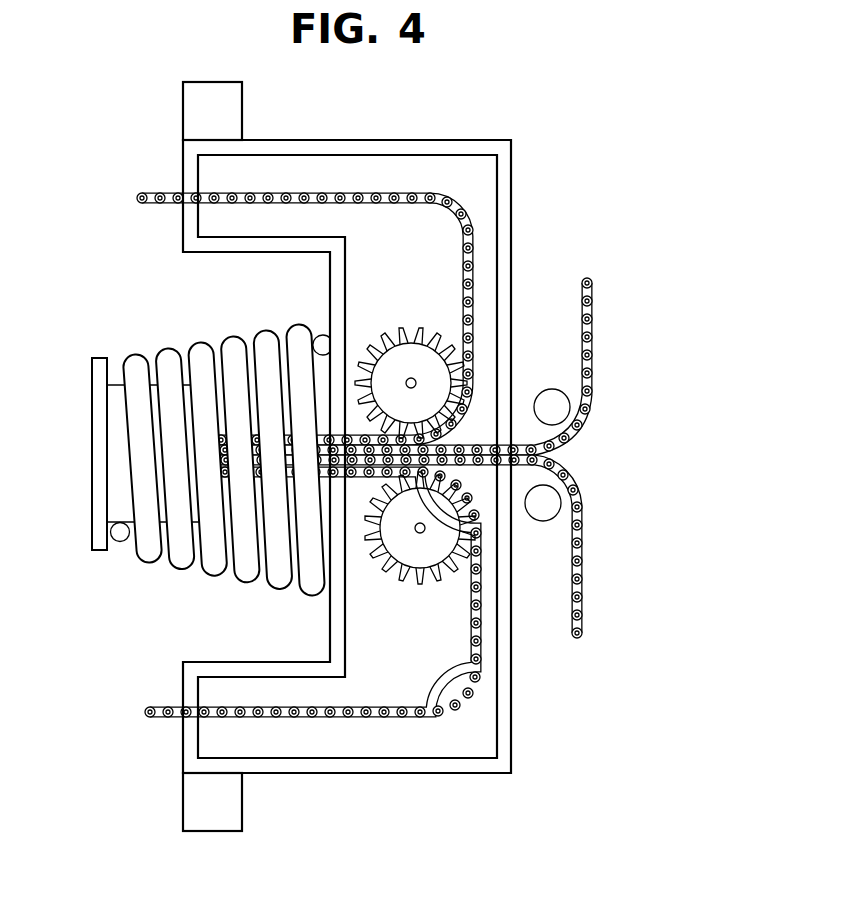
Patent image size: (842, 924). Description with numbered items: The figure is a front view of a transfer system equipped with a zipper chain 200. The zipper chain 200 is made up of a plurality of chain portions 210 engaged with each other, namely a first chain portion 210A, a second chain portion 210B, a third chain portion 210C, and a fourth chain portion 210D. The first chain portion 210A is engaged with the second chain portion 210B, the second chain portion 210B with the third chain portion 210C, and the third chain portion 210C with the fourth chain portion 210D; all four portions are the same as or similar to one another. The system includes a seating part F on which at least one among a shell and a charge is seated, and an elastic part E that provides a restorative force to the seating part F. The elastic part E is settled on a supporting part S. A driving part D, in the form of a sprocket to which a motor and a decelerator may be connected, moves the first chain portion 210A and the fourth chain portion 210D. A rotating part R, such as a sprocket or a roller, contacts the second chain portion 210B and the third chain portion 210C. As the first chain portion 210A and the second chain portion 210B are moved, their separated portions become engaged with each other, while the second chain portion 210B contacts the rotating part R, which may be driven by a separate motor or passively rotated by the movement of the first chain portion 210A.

The zipper chain 200 is at (493, 372).
The chain portions 210 is at (455, 455).
The first chain portion 210A is at (480, 518).
The second chain portion 210B is at (582, 507).
The third chain portion 210C is at (465, 394).
The fourth chain portion 210D is at (595, 332).
The driving part D is at (400, 353).
The elastic part E is at (137, 371).
The seating part F is at (96, 454).
The rotating part R is at (542, 512).
The supporting part S is at (392, 767).